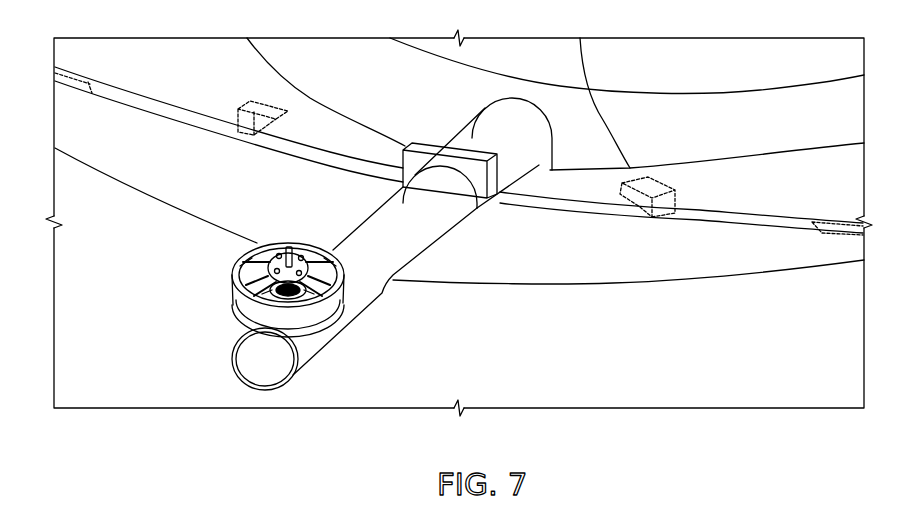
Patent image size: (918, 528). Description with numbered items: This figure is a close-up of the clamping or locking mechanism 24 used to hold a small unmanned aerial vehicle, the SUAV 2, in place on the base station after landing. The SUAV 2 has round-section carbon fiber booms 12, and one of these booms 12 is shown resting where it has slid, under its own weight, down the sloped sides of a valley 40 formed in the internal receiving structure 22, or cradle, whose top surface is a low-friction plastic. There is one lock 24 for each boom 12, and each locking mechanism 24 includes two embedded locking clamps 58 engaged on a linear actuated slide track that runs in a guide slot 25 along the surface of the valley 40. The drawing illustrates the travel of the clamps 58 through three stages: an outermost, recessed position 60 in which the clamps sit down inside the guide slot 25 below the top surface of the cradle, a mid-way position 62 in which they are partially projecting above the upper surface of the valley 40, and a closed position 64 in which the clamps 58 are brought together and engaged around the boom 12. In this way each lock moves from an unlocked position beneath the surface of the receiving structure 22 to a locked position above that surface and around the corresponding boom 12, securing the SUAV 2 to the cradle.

The SUAV 2 is at (612, 139).
The boom 12 is at (347, 327).
The internal receiving structure 22 is at (634, 366).
The locking mechanism 24 is at (517, 148).
The guide slot 25 is at (743, 213).
The valley 40 is at (520, 253).
The locking clamp 58 is at (293, 110).
The recessed position 60 is at (104, 108).
The mid-way position 62 is at (278, 160).
The closed position 64 is at (482, 208).